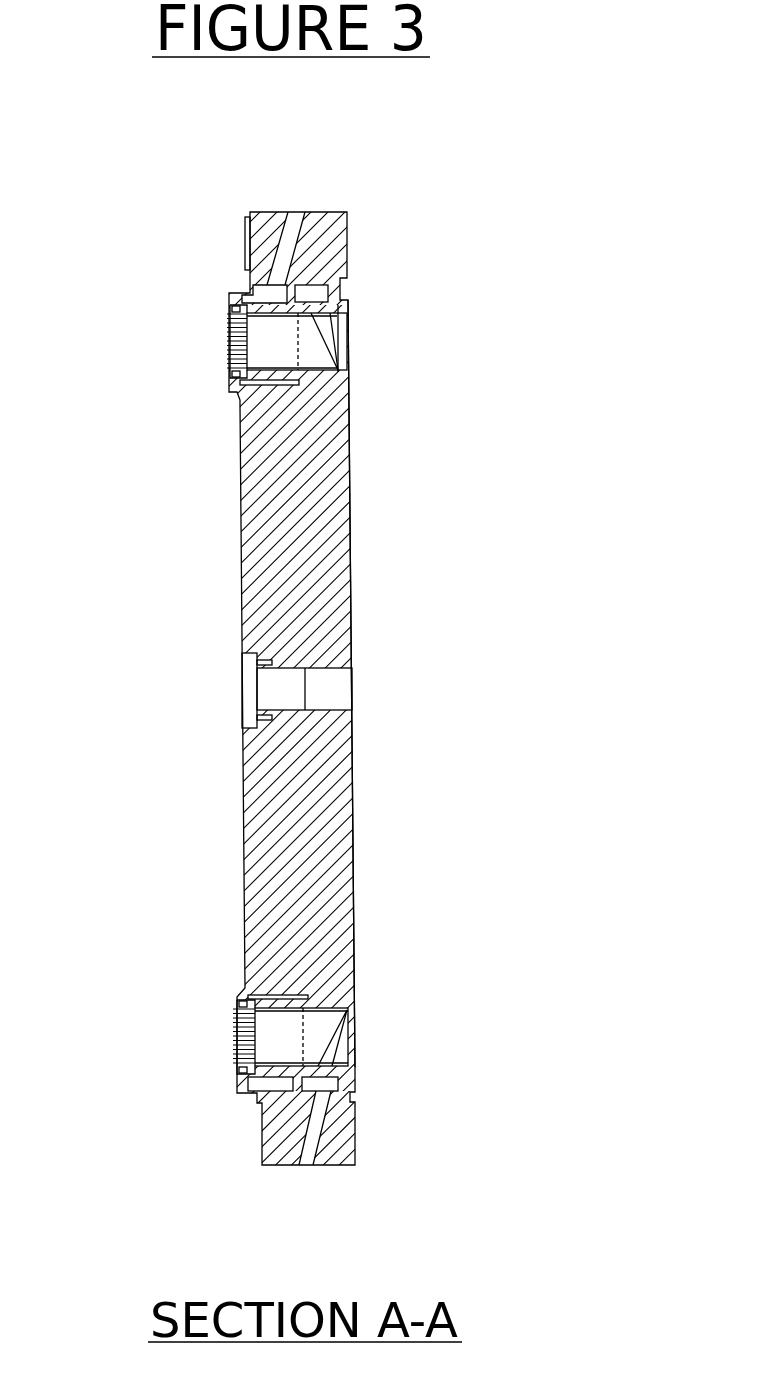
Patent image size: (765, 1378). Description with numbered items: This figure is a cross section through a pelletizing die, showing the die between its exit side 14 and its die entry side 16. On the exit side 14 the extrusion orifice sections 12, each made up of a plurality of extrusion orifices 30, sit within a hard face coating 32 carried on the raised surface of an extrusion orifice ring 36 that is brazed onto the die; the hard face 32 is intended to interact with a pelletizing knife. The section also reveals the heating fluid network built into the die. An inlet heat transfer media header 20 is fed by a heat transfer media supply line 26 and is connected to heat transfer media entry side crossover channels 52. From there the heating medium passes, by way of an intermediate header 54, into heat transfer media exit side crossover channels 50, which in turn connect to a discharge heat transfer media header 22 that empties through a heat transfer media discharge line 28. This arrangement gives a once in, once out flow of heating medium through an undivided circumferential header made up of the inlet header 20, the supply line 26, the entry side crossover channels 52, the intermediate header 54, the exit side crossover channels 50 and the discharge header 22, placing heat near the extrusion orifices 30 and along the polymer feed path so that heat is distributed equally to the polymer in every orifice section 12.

The extrusion orifice section 12 is at (232, 365).
The exit side 14 is at (240, 602).
The die entry side 16 is at (352, 565).
The inlet heat transfer media header 20 is at (263, 1087).
The discharge heat transfer media header 22 is at (325, 1083).
The heat transfer media supply line 26 is at (290, 225).
The heat transfer media discharge line 28 is at (315, 1137).
The extrusion orifice 30 is at (230, 311).
The hard face coating 32 is at (228, 353).
The extrusion orifice ring 36 is at (230, 293).
The heat transfer media exit side crossover channel 50 is at (307, 1037).
The heat transfer media entry side crossover channel 52 is at (245, 1000).
The intermediate header 54 is at (303, 993).